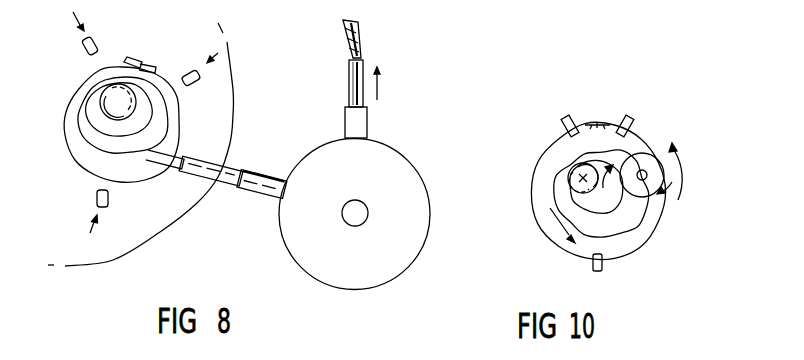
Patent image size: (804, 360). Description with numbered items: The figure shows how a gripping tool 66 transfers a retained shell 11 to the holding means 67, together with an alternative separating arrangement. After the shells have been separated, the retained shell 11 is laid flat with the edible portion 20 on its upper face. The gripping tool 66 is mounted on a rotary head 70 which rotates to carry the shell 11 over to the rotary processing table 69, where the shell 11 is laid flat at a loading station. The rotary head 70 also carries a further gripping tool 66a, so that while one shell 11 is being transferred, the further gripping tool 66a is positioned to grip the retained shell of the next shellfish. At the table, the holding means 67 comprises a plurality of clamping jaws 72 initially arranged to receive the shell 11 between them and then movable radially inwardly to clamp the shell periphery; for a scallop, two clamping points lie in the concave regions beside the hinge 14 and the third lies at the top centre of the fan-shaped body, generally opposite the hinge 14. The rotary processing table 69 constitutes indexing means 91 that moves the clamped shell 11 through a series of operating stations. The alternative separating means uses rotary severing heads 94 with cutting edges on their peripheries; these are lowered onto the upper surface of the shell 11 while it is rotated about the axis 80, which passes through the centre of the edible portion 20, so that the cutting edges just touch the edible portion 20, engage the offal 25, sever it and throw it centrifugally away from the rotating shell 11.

In FIG. 8, the retained shell 11 is at (73, 112).
In FIG. 10, the retained shell 11 is at (640, 233).
In FIG. 8, the hinge 14 is at (143, 63).
In FIG. 8, the edible portion 20 is at (113, 98).
In FIG. 10, the edible portion 20 is at (572, 167).
In FIG. 8, the offal 25 is at (103, 142).
In FIG. 10, the offal 25 is at (573, 207).
In FIG. 8, the gripping tool 66 is at (178, 155).
In FIG. 8, the further gripping tool 66a is at (365, 27).
In FIG. 8, the holding means 67 is at (119, 48).
In FIG. 8, the rotary processing table 69 is at (160, 208).
In FIG. 8, the rotary head 70 is at (322, 264).
In FIG. 8, the clamping jaws 72 is at (91, 37).
In FIG. 10, the clamping jaws 72 is at (602, 267).
In FIG. 10, the axis 80 is at (583, 178).
In FIG. 8, the indexing means 91 is at (110, 266).
In FIG. 10, the indexing means 91 is at (642, 138).
In FIG. 10, the rotary severing heads 94 is at (643, 185).